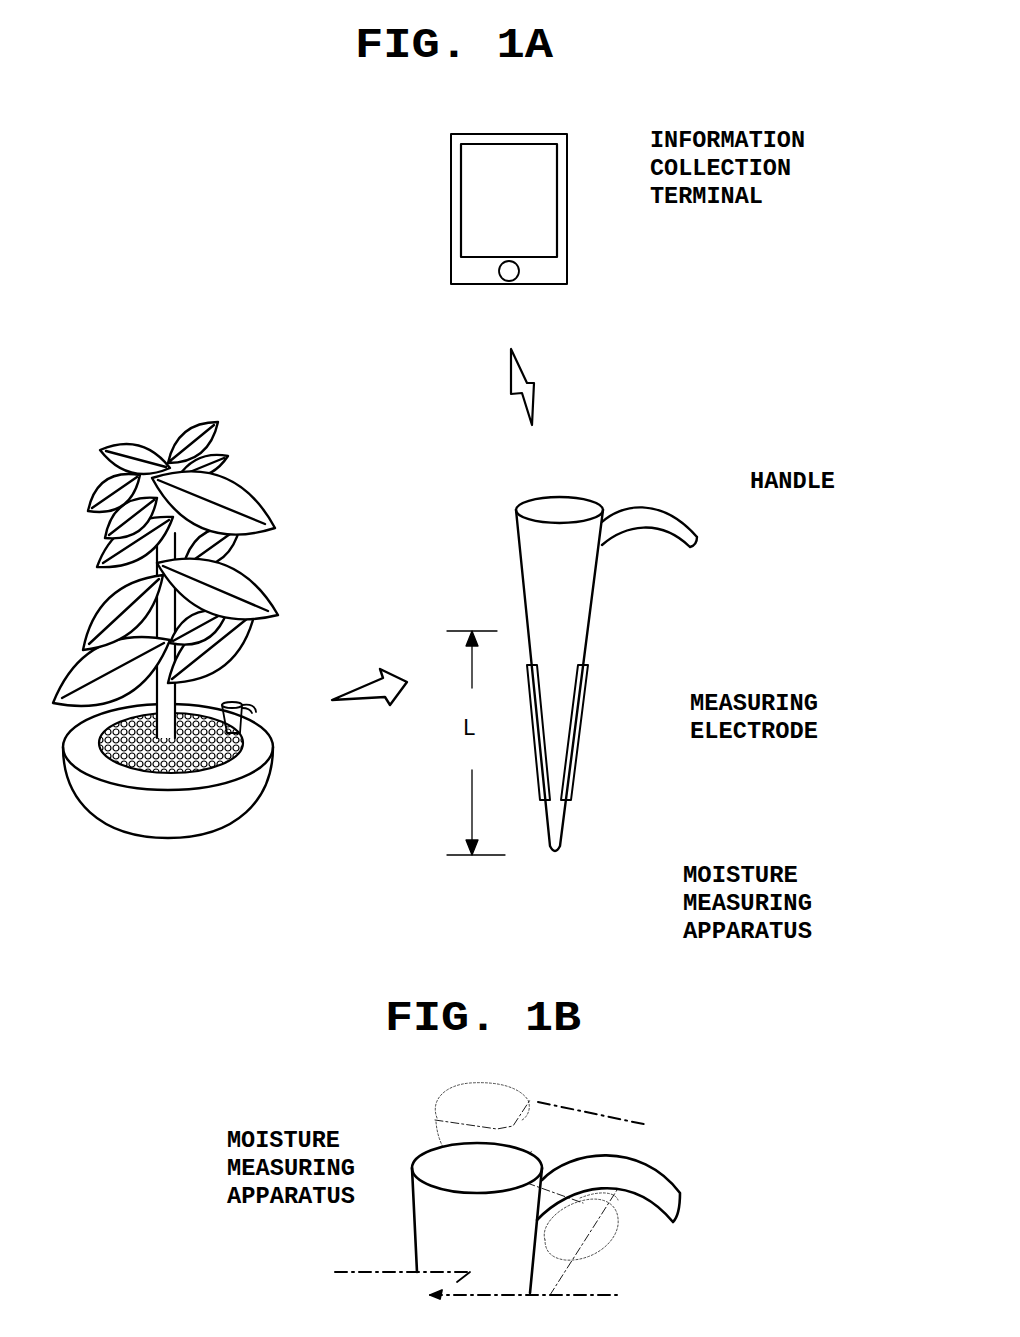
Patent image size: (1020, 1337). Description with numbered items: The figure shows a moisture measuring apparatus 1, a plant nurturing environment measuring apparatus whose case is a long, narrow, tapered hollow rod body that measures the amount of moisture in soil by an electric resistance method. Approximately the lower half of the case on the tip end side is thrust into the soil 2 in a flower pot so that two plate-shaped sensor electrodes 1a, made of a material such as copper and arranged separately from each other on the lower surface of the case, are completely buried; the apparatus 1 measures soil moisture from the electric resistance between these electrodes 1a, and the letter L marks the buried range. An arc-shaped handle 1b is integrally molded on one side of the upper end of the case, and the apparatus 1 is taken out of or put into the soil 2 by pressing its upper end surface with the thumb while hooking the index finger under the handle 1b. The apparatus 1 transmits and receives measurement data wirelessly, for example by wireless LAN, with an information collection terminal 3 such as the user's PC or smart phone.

In FIG. 1A, the moisture measuring apparatus 1 is at (245, 696).
In FIG. 1B, the moisture measuring apparatus 1 is at (411, 1192).
In FIG. 1A, the sensor electrodes 1a is at (583, 710).
In FIG. 1A, the handle 1b is at (675, 522).
In FIG. 1A, the soil 2 is at (264, 757).
In FIG. 1A, the information collection terminal 3 is at (567, 183).